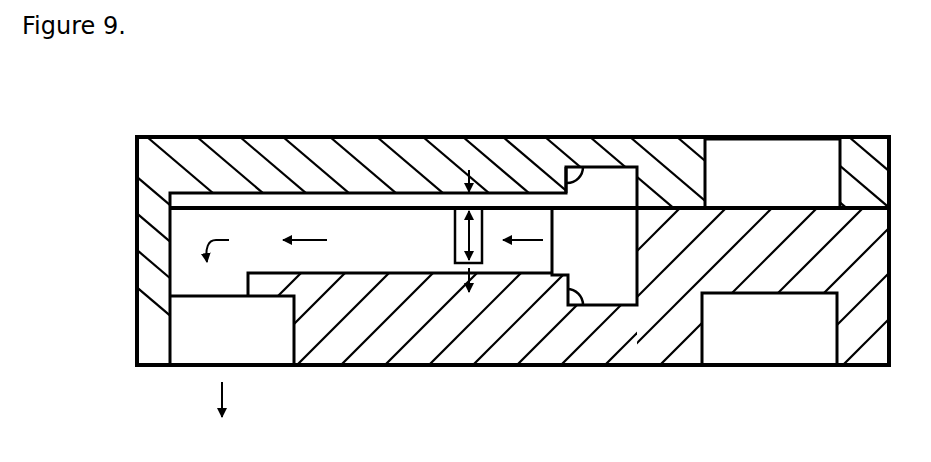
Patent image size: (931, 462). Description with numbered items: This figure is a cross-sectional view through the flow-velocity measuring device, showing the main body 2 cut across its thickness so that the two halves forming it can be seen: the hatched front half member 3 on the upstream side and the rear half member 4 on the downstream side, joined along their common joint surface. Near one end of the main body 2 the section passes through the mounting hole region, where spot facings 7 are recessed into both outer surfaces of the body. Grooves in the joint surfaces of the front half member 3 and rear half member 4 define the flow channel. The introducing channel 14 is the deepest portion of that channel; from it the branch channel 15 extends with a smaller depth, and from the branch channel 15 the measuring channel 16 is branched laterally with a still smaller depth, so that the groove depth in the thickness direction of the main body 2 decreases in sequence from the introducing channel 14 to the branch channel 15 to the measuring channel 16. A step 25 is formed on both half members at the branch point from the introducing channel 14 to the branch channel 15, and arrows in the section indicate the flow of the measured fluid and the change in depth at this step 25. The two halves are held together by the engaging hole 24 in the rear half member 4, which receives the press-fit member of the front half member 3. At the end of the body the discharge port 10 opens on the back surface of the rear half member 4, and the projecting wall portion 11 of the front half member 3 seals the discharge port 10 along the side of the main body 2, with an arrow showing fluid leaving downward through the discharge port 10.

The main body 2 is at (122, 150).
The front half member 3 is at (340, 137).
The rear half member 4 is at (393, 367).
The spot facings 7 is at (780, 187).
The discharge port 10 is at (292, 367).
The projecting wall portion 11 is at (137, 282).
The introducing channel 14 is at (616, 252).
The branch channel 15 is at (388, 252).
The measuring channel 16 is at (455, 237).
The engaging hole 24 is at (577, 170).
The step 25 is at (480, 193).